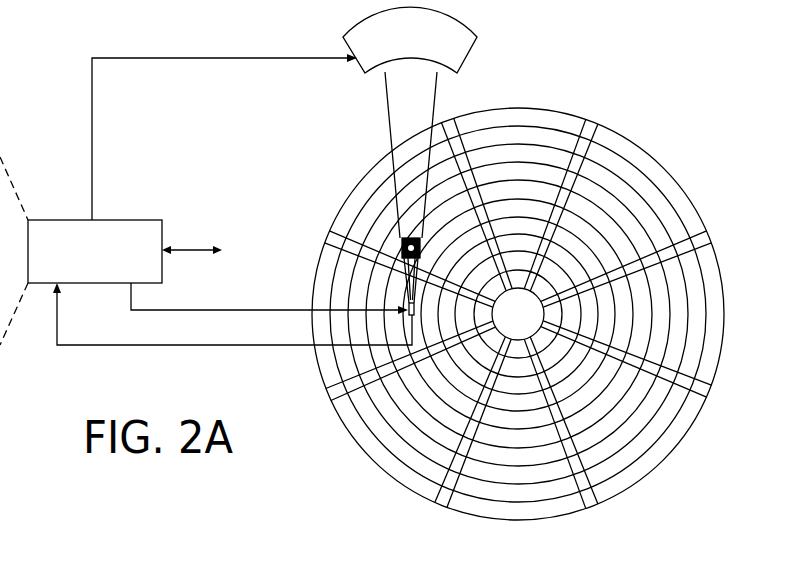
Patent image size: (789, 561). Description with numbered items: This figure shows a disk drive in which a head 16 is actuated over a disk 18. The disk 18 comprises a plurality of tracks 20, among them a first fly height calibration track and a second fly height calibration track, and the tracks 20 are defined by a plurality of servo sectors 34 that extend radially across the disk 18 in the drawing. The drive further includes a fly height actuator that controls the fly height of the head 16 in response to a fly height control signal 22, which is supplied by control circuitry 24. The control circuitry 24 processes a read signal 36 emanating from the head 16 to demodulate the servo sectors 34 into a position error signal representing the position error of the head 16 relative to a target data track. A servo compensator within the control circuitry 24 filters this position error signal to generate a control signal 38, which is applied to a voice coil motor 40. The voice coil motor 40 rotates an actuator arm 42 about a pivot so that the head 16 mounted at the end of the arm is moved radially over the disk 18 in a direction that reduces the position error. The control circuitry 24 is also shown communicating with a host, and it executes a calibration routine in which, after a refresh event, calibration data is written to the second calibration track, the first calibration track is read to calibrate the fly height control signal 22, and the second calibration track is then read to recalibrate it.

The head 16 is at (426, 310).
The disk 18 is at (663, 152).
The tracks 20 is at (517, 137).
The fly height control signal 22 is at (293, 308).
The control circuitry 24 is at (128, 220).
The servo sectors 34 is at (593, 124).
The read signal 36 is at (211, 347).
The control signal 38 is at (92, 125).
The voice coil motor 40 is at (363, 70).
The actuator arm 42 is at (393, 138).